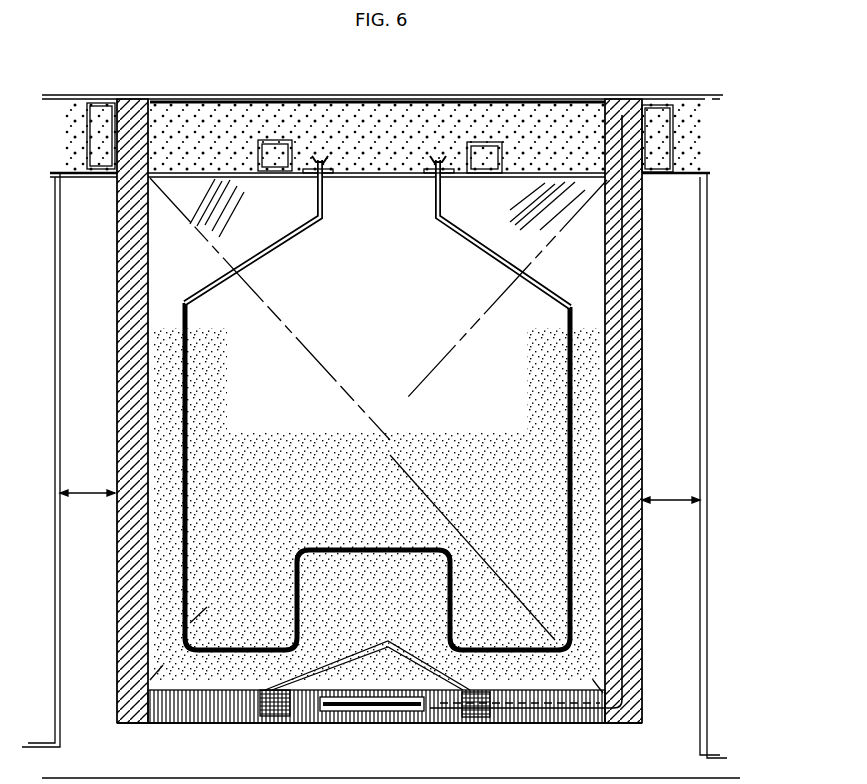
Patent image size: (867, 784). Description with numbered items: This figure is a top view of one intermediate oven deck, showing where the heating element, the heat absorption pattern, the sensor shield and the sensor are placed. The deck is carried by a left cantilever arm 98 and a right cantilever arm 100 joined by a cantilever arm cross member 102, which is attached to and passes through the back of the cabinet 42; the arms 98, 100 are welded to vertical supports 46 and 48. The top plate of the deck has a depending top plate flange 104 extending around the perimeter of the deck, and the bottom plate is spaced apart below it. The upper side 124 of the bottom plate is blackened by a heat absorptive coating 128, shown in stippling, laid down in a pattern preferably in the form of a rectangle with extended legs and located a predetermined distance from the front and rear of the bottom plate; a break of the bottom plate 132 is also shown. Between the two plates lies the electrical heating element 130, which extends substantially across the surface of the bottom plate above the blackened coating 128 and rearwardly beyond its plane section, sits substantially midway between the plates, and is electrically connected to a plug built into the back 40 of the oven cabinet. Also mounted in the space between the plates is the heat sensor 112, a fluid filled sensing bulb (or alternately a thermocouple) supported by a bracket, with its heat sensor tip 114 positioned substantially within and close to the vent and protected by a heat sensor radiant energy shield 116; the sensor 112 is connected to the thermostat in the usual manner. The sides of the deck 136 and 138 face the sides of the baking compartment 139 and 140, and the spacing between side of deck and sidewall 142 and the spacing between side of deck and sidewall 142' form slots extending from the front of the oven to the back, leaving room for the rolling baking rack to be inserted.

The back of the oven cabinet 40 is at (235, 95).
The cabinet 42 is at (97, 387).
The vertical support 46 is at (657, 171).
The vertical support 48 is at (102, 166).
The cantilever arm left 98 is at (130, 327).
The cantilever arm right 100 is at (630, 233).
The cantilever arm cross member 102 is at (165, 723).
The top plate flange 104 is at (507, 723).
The heat sensor 112 is at (375, 723).
The heat sensor tip 114 is at (320, 723).
The heat sensor radiant energy shield 116 is at (437, 680).
The upper side of bottom plate 124 is at (442, 320).
The heat absorptive coating 128 is at (218, 457).
The heating element 130 is at (275, 243).
The break of bottom plate 132 is at (307, 357).
The side of deck 136 is at (642, 590).
The side of deck 138 is at (115, 584).
The side of baking compartment 139 is at (60, 298).
The side of baking compartment 140 is at (700, 300).
The spacing between side of deck and sidewall 142 is at (63, 512).
The spacing between side of deck and sidewall 142' is at (706, 479).